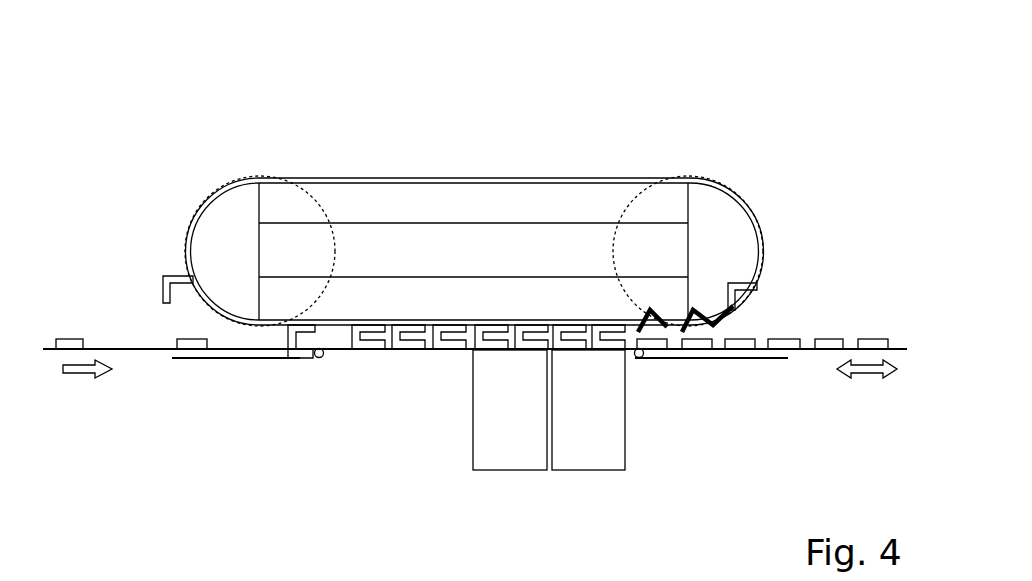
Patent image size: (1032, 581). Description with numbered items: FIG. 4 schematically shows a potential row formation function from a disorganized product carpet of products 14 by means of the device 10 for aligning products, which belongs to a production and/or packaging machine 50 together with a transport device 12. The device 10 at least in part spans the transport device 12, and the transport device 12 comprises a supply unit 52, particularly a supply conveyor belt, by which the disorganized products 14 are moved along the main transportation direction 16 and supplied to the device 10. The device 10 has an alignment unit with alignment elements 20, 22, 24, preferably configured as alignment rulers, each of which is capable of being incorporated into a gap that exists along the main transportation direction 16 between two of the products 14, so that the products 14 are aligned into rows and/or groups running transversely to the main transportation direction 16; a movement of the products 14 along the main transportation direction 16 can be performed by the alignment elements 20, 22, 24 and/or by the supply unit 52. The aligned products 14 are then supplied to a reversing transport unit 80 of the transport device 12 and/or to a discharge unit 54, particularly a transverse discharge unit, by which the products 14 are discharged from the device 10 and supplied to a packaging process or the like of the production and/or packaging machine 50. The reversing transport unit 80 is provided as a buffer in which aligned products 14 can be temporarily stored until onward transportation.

The device for aligning products 10 is at (176, 176).
The transport device 12 is at (108, 337).
The products 14 is at (180, 338).
The main transportation direction 16 is at (88, 377).
The alignment element 20 is at (162, 292).
The alignment element 22 is at (288, 353).
The alignment element 24 is at (356, 338).
The production and/or packaging machine 50 is at (763, 135).
The supply unit 52 is at (215, 362).
The discharge unit 54 is at (510, 437).
The reversing transport unit 80 is at (757, 363).